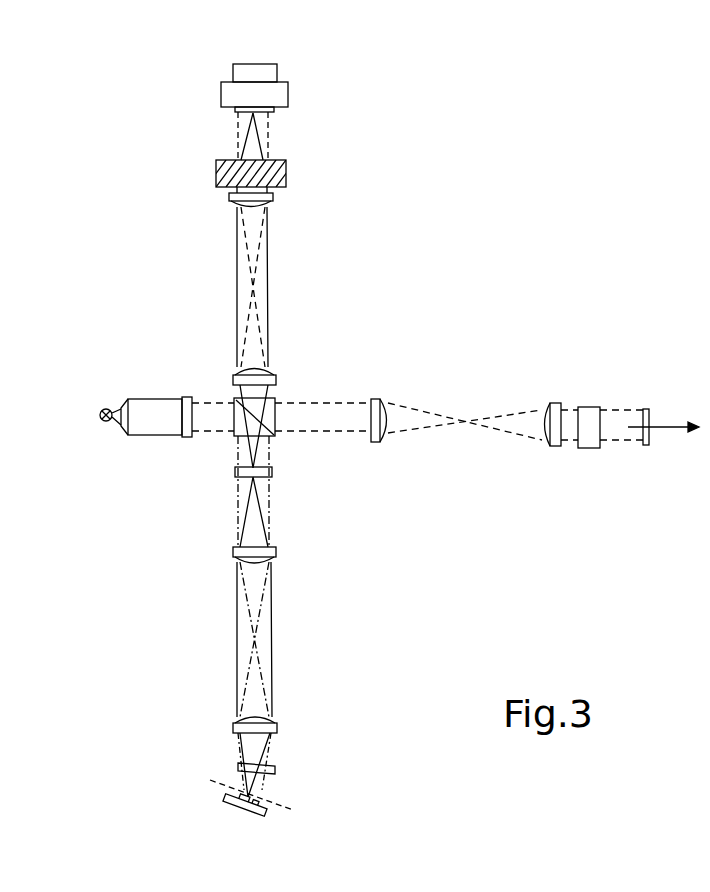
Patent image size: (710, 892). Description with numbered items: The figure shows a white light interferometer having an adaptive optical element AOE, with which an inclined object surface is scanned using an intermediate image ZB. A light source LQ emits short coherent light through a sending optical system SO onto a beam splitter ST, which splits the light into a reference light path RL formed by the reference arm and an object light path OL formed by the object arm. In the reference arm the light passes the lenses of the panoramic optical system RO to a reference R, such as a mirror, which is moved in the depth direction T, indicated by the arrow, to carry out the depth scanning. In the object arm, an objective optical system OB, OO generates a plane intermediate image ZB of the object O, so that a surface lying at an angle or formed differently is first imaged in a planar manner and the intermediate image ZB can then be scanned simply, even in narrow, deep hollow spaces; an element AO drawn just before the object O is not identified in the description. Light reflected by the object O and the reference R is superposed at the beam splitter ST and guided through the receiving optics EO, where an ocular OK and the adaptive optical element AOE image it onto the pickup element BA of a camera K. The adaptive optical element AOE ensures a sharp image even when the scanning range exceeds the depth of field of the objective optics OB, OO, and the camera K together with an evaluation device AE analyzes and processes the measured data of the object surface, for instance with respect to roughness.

The evaluation device AE is at (277, 72).
The camera K is at (288, 97).
The pickup element BA is at (275, 115).
The adaptive optical element AOE is at (287, 173).
The ocular optical system OK is at (273, 203).
The receiving optics EO is at (330, 273).
The objective optical system OB is at (277, 378).
The beam splitter ST is at (275, 428).
The intermediate image ZB is at (273, 472).
The light source LQ is at (110, 403).
The sending optical system SO is at (153, 437).
The reference light path RL is at (453, 392).
The panoramic optical system RO is at (385, 445).
The reference R is at (647, 447).
The depth direction T is at (678, 440).
The object light path OL is at (230, 590).
The objective optical system OO is at (277, 557).
The aperture plate AO is at (283, 758).
The object O is at (233, 808).